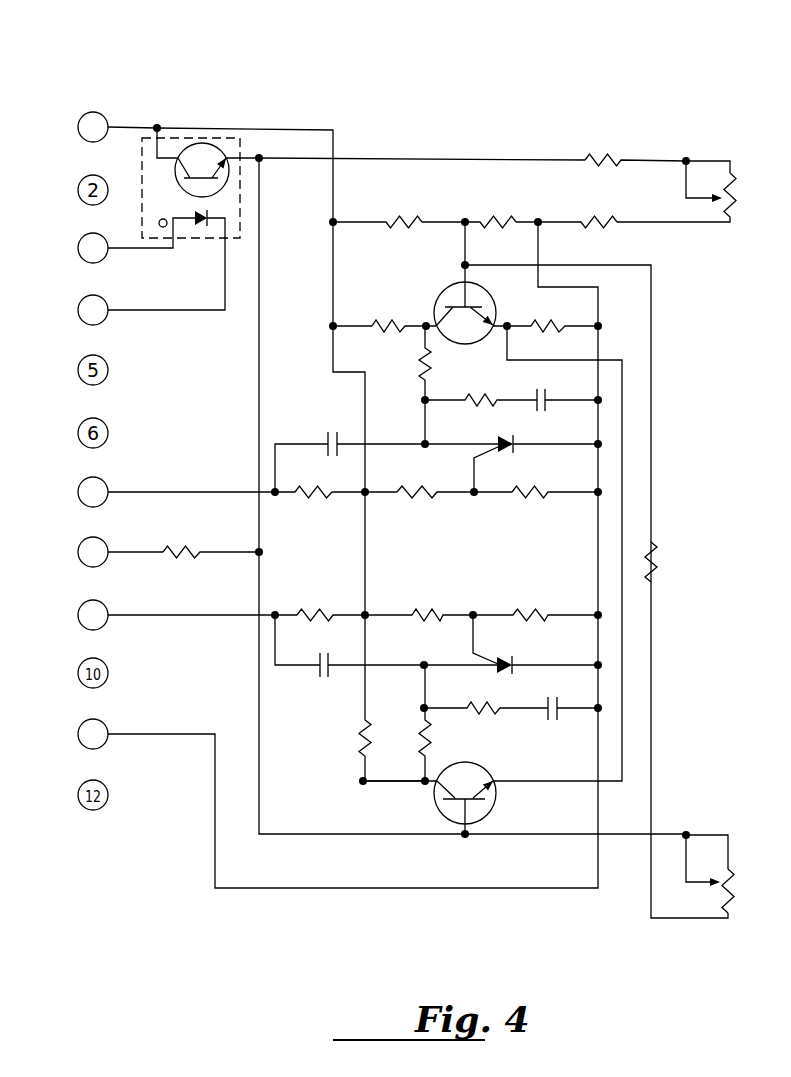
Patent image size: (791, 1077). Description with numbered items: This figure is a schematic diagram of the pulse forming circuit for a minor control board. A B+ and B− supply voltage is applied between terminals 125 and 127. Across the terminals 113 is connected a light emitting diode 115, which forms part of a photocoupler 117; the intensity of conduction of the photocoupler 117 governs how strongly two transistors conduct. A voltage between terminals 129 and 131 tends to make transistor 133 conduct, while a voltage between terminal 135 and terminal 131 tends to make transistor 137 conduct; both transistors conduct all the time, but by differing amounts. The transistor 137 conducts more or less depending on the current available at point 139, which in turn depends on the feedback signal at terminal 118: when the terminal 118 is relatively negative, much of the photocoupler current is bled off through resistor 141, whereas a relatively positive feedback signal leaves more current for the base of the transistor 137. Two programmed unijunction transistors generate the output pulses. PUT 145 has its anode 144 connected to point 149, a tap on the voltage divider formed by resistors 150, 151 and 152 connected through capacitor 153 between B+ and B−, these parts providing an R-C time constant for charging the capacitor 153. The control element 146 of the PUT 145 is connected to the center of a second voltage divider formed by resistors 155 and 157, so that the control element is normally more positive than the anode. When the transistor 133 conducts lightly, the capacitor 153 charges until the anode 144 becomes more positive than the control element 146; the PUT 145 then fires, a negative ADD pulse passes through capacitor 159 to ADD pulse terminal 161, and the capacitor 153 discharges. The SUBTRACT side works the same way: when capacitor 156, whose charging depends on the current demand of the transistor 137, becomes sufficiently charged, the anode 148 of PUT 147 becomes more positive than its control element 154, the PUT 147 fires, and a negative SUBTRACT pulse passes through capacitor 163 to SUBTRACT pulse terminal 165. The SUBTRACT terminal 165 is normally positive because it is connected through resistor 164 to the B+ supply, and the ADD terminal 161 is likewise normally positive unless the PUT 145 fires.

The terminal 125 is at (88, 112).
The photocoupler 117 is at (148, 172).
The terminals 113 is at (83, 297).
The light emitting diode 115 is at (198, 228).
The terminal 129 is at (330, 327).
The resistor 150 is at (380, 320).
The transistor 133 is at (453, 293).
The terminal 131 is at (507, 321).
The resistor 151 is at (420, 357).
The point 149 is at (420, 401).
The resistor 152 is at (472, 398).
The capacitor 153 is at (556, 372).
The anode 144 is at (461, 441).
The capacitor 159 is at (328, 438).
The programmed unijunction transistor 145 is at (508, 453).
The control element 146 is at (474, 474).
The ADD pulse terminal 161 is at (104, 481).
The resistor 155 is at (420, 497).
The resistor 157 is at (533, 497).
The terminal 118 is at (104, 541).
The resistor 141 is at (173, 558).
The point 139 is at (260, 551).
The SUBTRACT pulse terminal 165 is at (79, 607).
The resistor 164 is at (308, 610).
The control element 154 is at (483, 655).
The anode 148 is at (455, 663).
The programmed unijunction transistor 147 is at (507, 657).
The capacitor 163 is at (316, 672).
The capacitor 156 is at (548, 714).
The terminal 127 is at (80, 726).
The terminal 135 is at (363, 781).
The transistor 137 is at (488, 793).